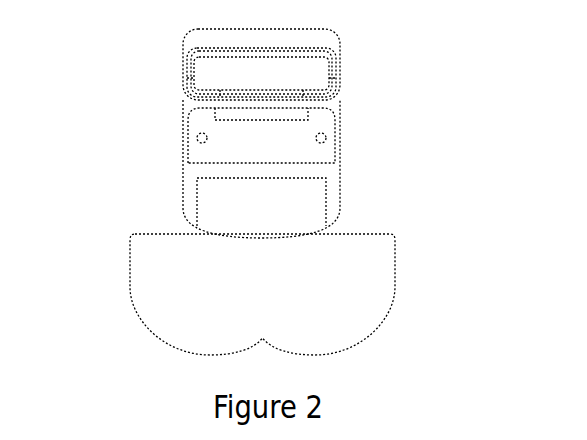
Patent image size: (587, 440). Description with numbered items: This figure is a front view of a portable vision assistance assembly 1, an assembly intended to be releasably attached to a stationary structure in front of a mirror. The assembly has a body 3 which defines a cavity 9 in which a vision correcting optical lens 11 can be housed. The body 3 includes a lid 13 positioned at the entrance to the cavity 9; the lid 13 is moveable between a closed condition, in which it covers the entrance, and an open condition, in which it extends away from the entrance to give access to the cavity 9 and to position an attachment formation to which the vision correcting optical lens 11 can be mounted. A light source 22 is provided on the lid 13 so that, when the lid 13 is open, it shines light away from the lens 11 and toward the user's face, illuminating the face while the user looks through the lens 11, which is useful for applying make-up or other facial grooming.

The portable vision assistance assembly 1 is at (100, 53).
The body 3 is at (356, 48).
The cavity 9 is at (267, 82).
The lid 13 is at (335, 139).
The light source 22 is at (276, 210).
The vision correcting optical lens 11 is at (353, 298).